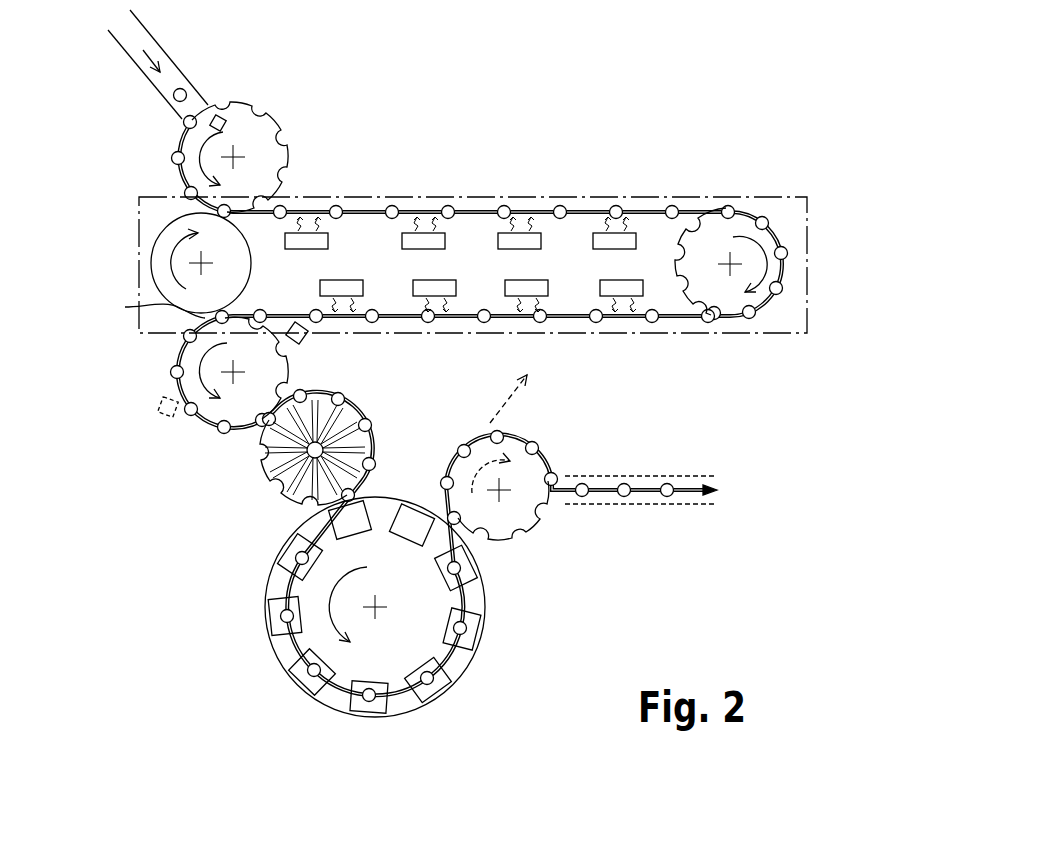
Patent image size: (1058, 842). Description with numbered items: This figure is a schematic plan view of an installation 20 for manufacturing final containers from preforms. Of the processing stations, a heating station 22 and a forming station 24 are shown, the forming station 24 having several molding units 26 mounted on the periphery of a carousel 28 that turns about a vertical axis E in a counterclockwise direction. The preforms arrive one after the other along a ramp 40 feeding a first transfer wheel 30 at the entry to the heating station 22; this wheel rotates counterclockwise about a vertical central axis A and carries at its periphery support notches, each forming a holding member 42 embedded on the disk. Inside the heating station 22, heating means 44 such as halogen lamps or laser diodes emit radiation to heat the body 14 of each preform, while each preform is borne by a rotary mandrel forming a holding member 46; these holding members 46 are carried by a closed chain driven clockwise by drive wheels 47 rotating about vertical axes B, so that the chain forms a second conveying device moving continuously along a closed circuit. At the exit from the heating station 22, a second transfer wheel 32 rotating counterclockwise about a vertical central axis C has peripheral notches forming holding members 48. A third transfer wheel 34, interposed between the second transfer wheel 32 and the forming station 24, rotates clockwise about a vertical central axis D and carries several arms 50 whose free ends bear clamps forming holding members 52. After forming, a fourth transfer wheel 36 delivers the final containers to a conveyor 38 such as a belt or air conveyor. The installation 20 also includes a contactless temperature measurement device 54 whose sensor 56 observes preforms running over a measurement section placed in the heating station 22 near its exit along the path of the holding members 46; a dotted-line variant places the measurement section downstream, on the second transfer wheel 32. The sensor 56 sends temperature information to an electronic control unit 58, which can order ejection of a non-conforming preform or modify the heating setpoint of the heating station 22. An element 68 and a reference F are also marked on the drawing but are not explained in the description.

The body 14 is at (175, 158).
The installation 20 is at (732, 135).
The heating station 22 is at (594, 197).
The forming station 24 is at (263, 651).
The molding units 26 is at (303, 690).
The carousel 28 is at (458, 663).
The first transfer wheel 30 is at (272, 145).
The second transfer wheel 32 is at (255, 378).
The third transfer wheel 34 is at (275, 470).
The fourth transfer wheel 36 is at (508, 510).
The conveyor 38 is at (647, 495).
The ramp 40 is at (148, 33).
The holding member 42 is at (285, 197).
The heating means 44 is at (504, 233).
The holding member 46 is at (394, 211).
The drive wheels 47 is at (165, 278).
The holding member 48 is at (283, 349).
The arms 50 is at (370, 461).
The holding member 52 is at (362, 427).
The measurement device 54 is at (157, 413).
The sensor 56 is at (500, 521).
The electronic control unit 58 is at (537, 445).
The holder 68 is at (210, 116).
The vertical central axis A is at (267, 155).
The vertical axes B is at (222, 245).
The vertical central axis C is at (207, 422).
The vertical central axis D is at (290, 505).
The vertical axis E is at (378, 612).
The station F is at (497, 537).